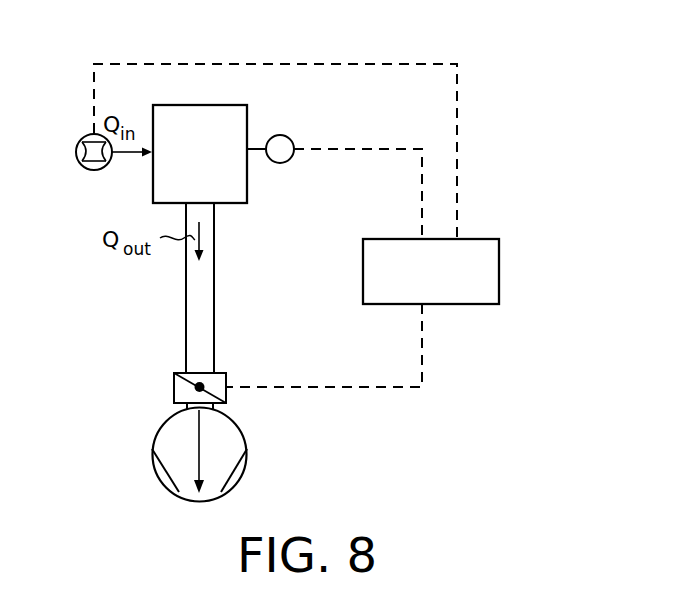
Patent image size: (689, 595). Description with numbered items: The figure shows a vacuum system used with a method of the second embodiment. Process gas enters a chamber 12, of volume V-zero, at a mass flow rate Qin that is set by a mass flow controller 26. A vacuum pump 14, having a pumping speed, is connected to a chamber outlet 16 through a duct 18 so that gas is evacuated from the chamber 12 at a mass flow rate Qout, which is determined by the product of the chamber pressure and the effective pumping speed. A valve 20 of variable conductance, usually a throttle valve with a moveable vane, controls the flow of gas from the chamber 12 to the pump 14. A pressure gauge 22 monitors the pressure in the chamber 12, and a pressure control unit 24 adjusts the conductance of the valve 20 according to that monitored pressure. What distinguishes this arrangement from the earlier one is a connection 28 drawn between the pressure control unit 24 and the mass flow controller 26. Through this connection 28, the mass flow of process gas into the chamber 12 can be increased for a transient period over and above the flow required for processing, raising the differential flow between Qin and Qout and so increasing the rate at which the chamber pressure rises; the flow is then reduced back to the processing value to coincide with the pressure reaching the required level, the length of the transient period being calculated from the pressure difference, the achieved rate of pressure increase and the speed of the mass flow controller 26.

The chamber 12 is at (196, 105).
The vacuum pump 14 is at (235, 483).
The chamber outlet 16 is at (232, 212).
The duct 18 is at (214, 310).
The valve 20 is at (226, 378).
The pressure gauge 22 is at (290, 138).
The pressure control unit 24 is at (499, 270).
The mass flow controller 26 is at (88, 170).
The connection 28 is at (457, 120).